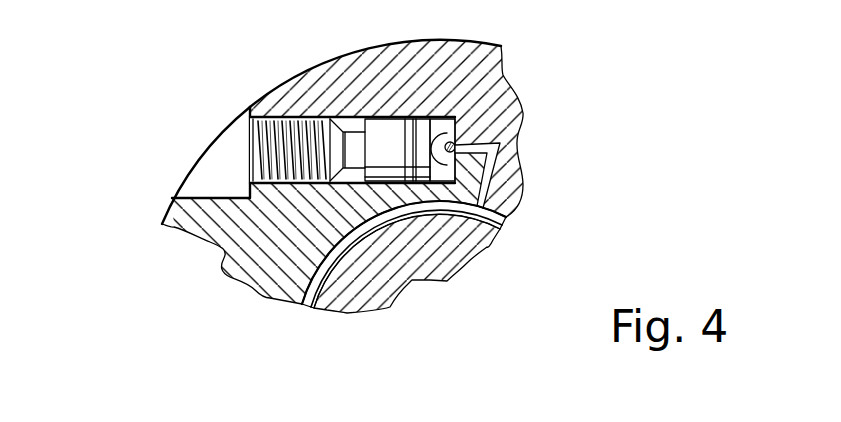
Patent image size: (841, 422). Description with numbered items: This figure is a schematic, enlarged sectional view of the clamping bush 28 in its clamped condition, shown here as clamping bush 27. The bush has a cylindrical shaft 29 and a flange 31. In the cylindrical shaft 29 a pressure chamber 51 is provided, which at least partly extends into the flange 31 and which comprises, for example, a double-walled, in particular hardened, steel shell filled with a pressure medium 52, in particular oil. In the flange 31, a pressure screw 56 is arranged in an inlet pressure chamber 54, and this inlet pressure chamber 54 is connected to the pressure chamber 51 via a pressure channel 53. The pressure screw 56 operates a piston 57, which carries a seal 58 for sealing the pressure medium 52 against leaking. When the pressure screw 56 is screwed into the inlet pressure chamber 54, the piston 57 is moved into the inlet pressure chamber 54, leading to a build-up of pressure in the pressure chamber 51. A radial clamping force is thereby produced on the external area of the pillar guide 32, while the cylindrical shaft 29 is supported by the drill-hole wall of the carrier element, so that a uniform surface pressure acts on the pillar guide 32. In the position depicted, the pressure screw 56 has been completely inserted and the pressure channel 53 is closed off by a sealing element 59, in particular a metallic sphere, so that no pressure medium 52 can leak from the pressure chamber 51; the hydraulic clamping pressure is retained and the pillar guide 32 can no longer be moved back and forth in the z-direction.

The clamping bush 27 is at (137, 225).
The clamping bush 28 is at (192, 256).
The cylindrical shaft 29 is at (318, 312).
The flange 31 is at (258, 257).
The pillar guide 32 is at (413, 258).
The pressure chamber 51 is at (305, 304).
The pressure medium 52 is at (507, 222).
The pressure channel 53 is at (490, 183).
The inlet pressure chamber 54 is at (450, 125).
The pressure screw 56 is at (252, 150).
The piston 57 is at (383, 118).
The seal 58 is at (417, 127).
The sealing element 59 is at (456, 147).